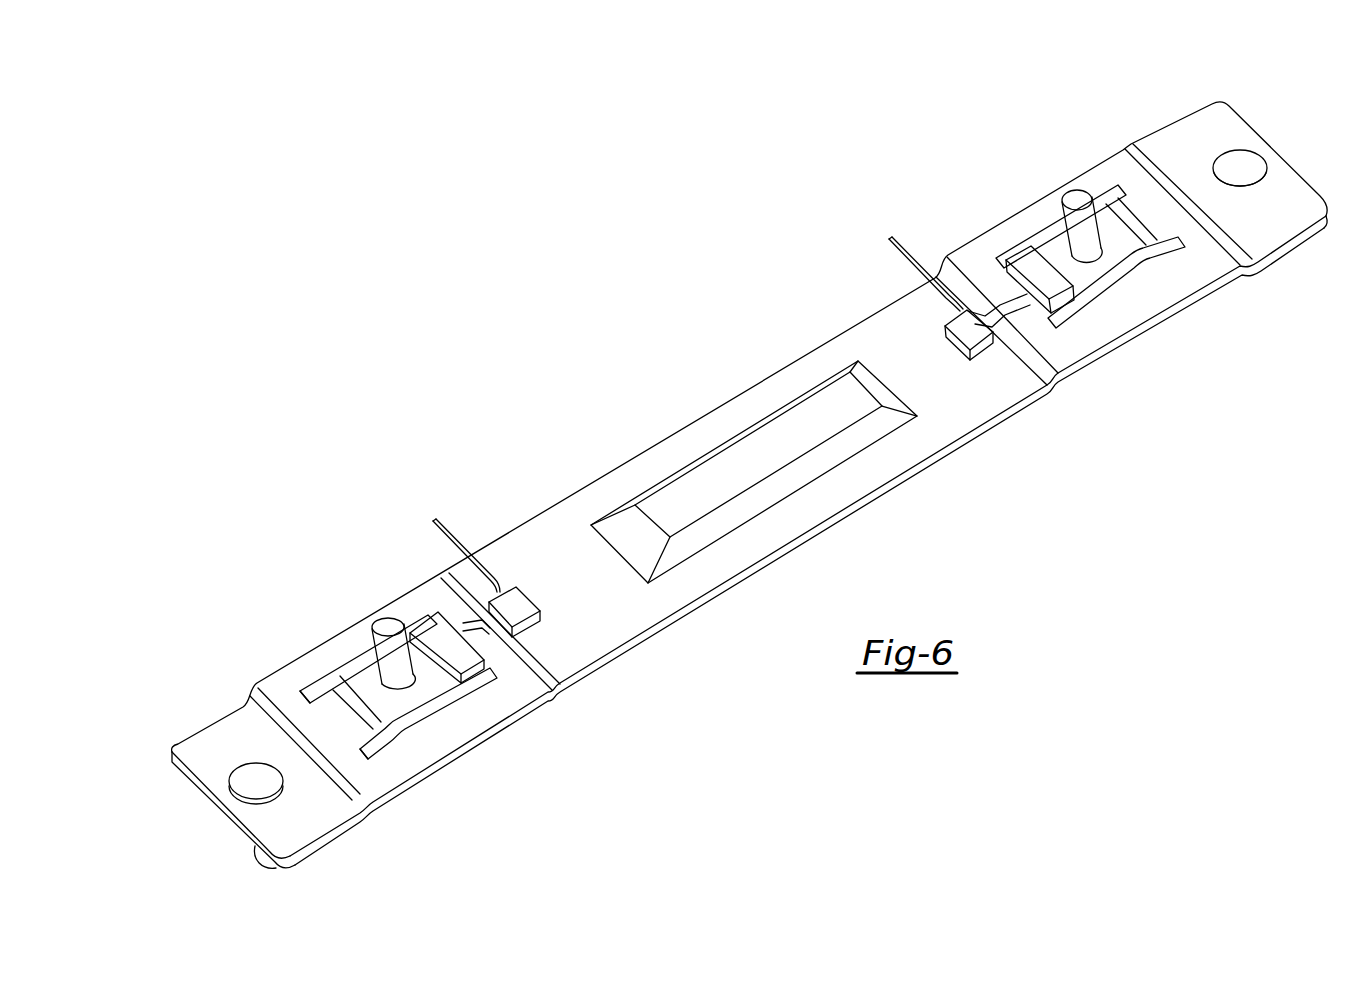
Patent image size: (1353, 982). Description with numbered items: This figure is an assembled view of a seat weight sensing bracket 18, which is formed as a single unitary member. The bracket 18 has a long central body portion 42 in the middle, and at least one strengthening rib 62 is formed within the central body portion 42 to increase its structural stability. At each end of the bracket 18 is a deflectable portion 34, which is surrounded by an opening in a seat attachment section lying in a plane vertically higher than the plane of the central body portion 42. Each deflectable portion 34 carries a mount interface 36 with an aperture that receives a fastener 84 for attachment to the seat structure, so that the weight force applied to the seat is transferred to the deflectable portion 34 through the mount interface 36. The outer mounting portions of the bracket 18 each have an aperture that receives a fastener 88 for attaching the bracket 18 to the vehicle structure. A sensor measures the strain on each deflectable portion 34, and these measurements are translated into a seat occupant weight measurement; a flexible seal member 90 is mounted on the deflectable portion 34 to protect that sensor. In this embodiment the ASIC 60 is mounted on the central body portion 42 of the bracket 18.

The bracket 18 is at (672, 368).
The deflectable portion 34 is at (302, 626).
The mount interface 36 is at (397, 700).
The central body portion 42 is at (855, 480).
The ASIC 60 is at (519, 600).
The strengthening rib 62 is at (826, 400).
The fastener 84 is at (386, 628).
The fastener 88 is at (238, 785).
The flexible seal member 90 is at (470, 653).